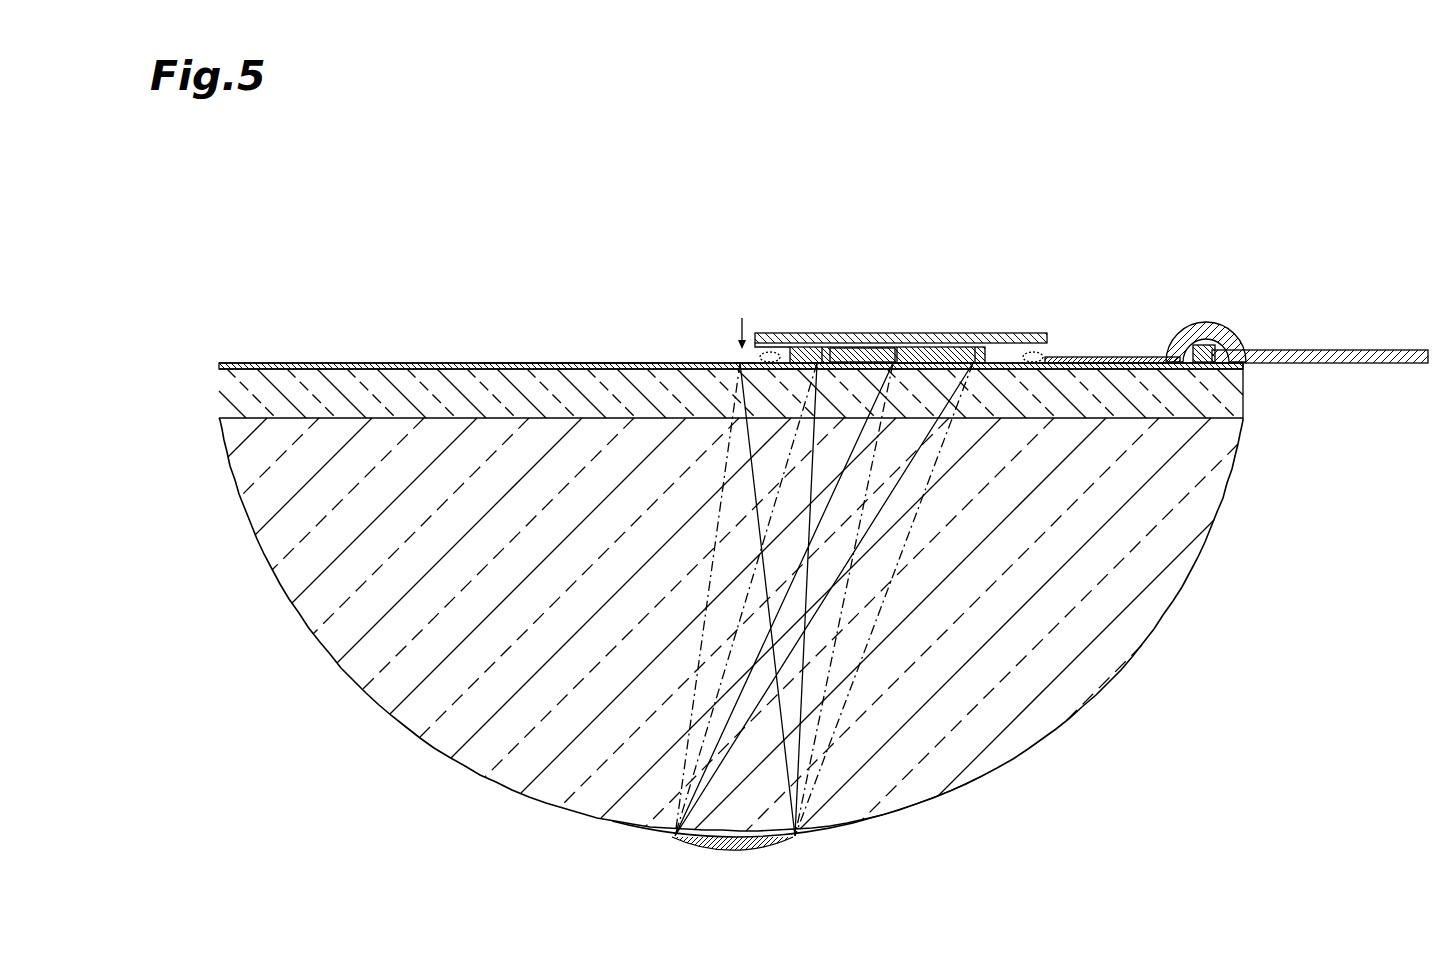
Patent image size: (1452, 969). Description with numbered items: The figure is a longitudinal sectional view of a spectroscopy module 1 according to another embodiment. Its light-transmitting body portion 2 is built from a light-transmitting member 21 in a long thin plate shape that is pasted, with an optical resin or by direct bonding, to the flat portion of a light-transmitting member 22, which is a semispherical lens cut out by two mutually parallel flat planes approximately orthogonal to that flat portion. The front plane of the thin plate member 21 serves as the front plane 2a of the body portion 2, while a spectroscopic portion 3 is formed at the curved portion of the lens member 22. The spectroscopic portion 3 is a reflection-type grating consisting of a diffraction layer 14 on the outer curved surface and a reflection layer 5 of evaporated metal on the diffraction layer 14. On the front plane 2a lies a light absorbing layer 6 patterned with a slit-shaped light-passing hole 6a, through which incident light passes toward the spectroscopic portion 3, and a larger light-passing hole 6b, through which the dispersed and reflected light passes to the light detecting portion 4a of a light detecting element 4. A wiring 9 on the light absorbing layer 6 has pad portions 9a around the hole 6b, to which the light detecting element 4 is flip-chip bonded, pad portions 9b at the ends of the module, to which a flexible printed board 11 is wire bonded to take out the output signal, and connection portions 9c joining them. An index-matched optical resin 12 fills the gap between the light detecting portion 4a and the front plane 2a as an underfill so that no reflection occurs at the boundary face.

The spectroscopy module 1 is at (313, 234).
The body portion 2 is at (220, 354).
The light-transmitting member 21 is at (300, 382).
The light-transmitting member 22 is at (290, 581).
The front plane 2a is at (570, 363).
The spectroscopic portion 3 is at (852, 842).
The light detecting element 4 is at (985, 334).
The light detecting portion 4a is at (935, 347).
The reflection layer 5 is at (742, 851).
The light absorbing layer 6 is at (378, 363).
The light-passing hole 6a is at (744, 362).
The light-passing hole 6b is at (800, 362).
The wiring 9 is at (1138, 276).
The pad portions 9a is at (758, 352).
The pad portions 9b is at (1185, 350).
The connection portions 9c is at (1120, 357).
The flexible printed board 11 is at (1348, 350).
The optical resin 12 is at (860, 350).
The diffraction layer 14 is at (650, 840).